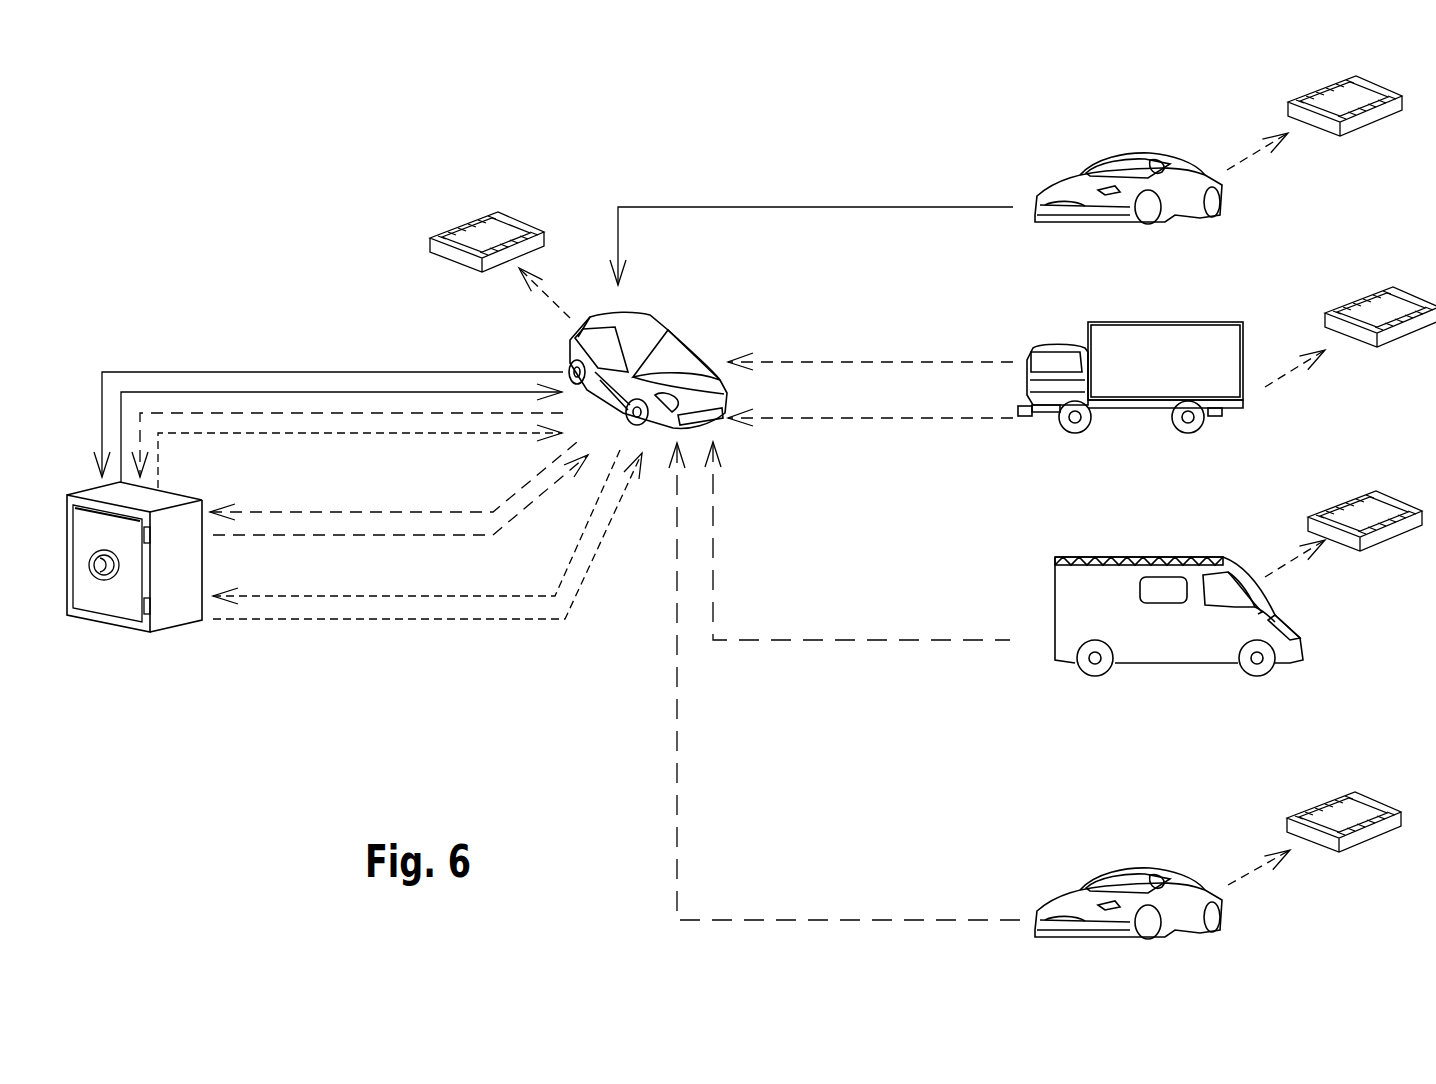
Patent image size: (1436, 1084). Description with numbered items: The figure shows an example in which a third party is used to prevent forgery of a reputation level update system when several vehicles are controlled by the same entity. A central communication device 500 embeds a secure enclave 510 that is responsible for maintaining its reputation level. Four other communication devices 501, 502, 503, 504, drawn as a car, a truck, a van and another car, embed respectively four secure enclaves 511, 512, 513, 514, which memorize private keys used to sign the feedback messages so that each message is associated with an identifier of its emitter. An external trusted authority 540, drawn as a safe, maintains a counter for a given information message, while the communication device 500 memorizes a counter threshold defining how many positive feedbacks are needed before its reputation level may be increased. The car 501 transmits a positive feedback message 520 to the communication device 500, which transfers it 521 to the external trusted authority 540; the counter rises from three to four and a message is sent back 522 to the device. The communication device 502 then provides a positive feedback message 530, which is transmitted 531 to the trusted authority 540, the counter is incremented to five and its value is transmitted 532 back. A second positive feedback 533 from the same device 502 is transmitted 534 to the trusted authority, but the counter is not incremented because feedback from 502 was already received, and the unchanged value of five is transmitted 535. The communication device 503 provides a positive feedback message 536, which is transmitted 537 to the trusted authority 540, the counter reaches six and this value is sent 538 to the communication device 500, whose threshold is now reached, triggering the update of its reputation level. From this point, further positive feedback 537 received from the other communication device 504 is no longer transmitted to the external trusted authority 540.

The communication device 500 is at (707, 335).
The communication device 501 is at (1148, 150).
The communication device 502 is at (1232, 437).
The communication device 503 is at (1290, 677).
The communication device 504 is at (1148, 862).
The secure enclave 510 is at (465, 225).
The secure enclave 511 is at (1285, 108).
The secure enclave 512 is at (1325, 316).
The secure enclave 513 is at (1385, 548).
The secure enclave 514 is at (1352, 853).
The positive feedback message 520 is at (856, 207).
The transmission to trusted authority 521 is at (283, 372).
The message sent back 522 is at (345, 392).
The positive feedback message 530 is at (872, 362).
The transmission to trusted authority 531 is at (400, 413).
The counter value transmission 532 is at (275, 433).
The second positive feedback message 533 is at (848, 418).
The transmission to trusted authority 534 is at (392, 512).
The counter value transmission 535 is at (325, 535).
The positive feedback message 536 is at (843, 640).
The transmission to trusted authority / positive feedback 537 is at (478, 596).
The counter value transmission 538 is at (432, 619).
The external trusted authority 540 is at (97, 655).